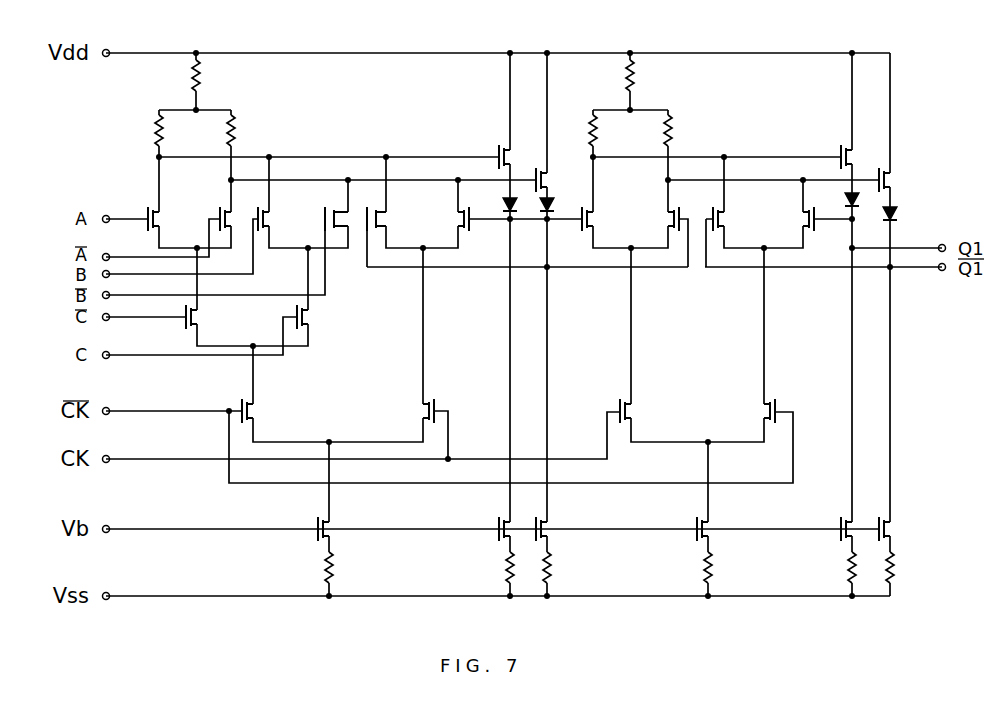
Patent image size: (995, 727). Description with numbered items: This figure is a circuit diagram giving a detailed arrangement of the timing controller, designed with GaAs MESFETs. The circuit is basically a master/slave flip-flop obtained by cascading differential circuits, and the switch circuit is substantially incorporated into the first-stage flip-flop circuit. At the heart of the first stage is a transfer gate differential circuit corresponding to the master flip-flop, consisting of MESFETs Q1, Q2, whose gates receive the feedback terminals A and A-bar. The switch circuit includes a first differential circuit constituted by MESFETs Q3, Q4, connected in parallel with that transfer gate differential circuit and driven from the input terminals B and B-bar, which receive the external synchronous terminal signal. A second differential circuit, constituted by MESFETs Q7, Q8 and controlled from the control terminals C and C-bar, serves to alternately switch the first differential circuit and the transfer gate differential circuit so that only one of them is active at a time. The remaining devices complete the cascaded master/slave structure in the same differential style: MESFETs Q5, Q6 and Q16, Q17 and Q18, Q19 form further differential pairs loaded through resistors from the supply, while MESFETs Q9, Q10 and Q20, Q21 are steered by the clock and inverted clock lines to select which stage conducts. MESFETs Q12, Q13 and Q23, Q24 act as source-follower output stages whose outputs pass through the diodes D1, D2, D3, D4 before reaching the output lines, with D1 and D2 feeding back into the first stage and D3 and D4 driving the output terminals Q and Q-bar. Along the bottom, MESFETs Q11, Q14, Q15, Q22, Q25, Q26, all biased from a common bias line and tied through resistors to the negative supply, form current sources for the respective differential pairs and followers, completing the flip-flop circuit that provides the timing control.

The MESFET Q1 is at (168, 208).
The MESFET Q2 is at (214, 208).
The MESFET Q3 is at (278, 208).
The MESFET Q4 is at (330, 208).
The MESFET Q5 is at (391, 208).
The MESFET Q6 is at (446, 224).
The MESFET Q7 is at (191, 317).
The MESFET Q8 is at (302, 317).
The MESFET Q9 is at (264, 411).
The MESFET Q10 is at (404, 411).
The MESFET Q11 is at (305, 518).
The MESFET Q12 is at (486, 144).
The MESFET Q13 is at (562, 172).
The MESFET Q14 is at (486, 518).
The MESFET Q15 is at (564, 518).
The MESFET Q16 is at (608, 208).
The MESFET Q17 is at (651, 225).
The MESFET Q18 is at (740, 208).
The MESFET Q19 is at (788, 225).
The MESFET Q20 is at (647, 411).
The MESFET Q21 is at (747, 411).
The MESFET Q22 is at (680, 518).
The MESFET Q23 is at (827, 144).
The MESFET Q24 is at (906, 172).
The MESFET Q25 is at (828, 518).
The MESFET Q26 is at (908, 518).
The diode D1 is at (501, 222).
The diode D2 is at (557, 222).
The diode D3 is at (839, 222).
The diode D4 is at (905, 222).